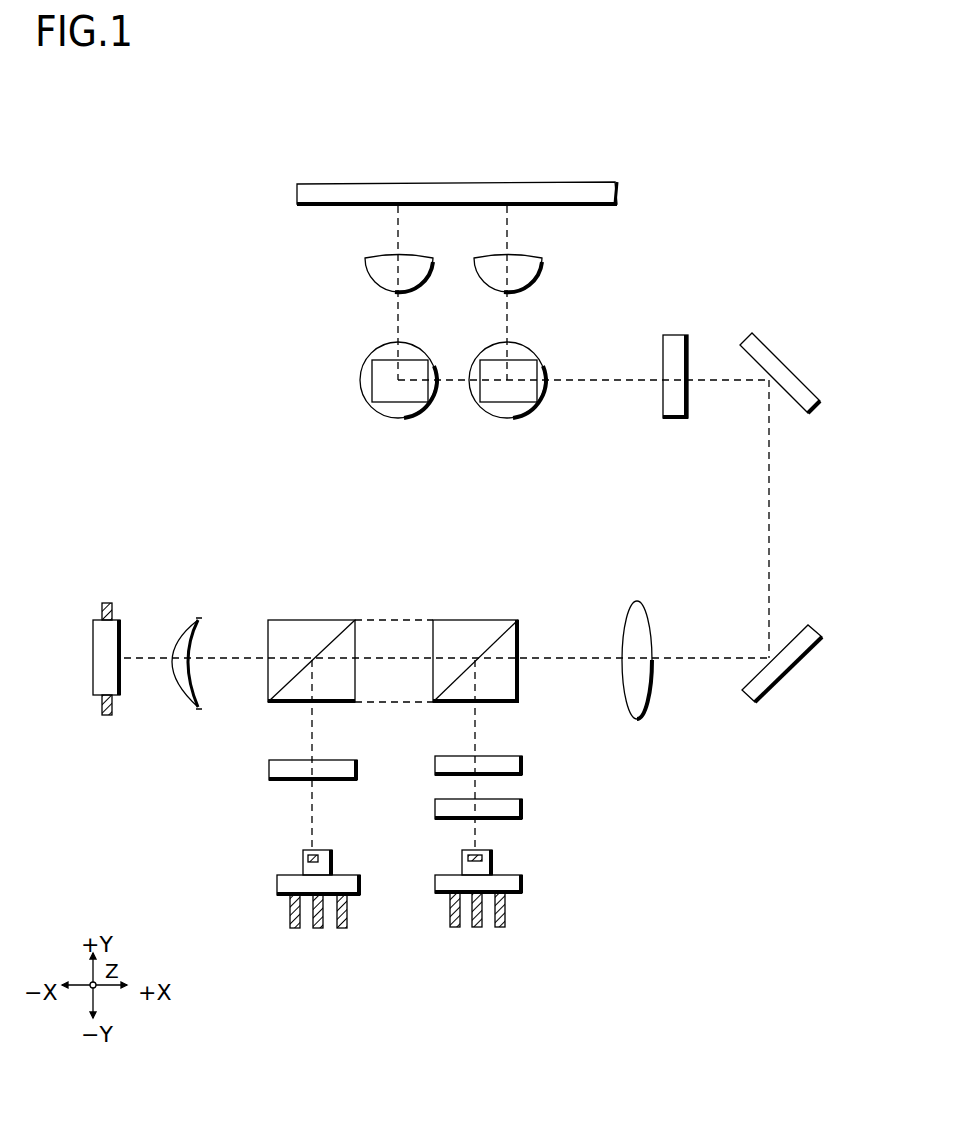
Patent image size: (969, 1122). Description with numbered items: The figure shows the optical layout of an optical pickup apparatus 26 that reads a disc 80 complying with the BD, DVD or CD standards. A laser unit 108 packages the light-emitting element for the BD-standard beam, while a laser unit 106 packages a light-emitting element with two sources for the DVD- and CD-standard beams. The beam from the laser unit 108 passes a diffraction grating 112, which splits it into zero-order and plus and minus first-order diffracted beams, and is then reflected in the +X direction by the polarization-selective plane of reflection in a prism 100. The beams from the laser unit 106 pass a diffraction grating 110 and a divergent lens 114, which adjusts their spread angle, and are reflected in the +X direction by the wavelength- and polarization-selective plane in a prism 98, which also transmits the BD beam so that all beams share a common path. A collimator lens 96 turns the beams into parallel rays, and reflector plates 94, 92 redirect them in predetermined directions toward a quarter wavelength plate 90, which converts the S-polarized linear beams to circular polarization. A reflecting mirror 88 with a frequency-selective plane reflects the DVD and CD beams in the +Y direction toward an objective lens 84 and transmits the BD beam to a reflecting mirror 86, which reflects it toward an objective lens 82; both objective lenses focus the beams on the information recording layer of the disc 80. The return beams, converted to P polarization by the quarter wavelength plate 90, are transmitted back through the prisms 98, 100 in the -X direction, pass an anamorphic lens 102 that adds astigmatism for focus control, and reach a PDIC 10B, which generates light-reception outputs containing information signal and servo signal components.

The optical pickup apparatus 26 is at (450, 196).
The disc 80 is at (618, 187).
The objective lens 82 is at (362, 265).
The objective lens 84 is at (545, 265).
The reflecting mirror 86 is at (400, 420).
The reflecting mirror 88 is at (512, 420).
The quarter wavelength plate 90 is at (677, 420).
The reflector plate 92 is at (783, 358).
The reflector plate 94 is at (795, 665).
The collimator lens 96 is at (636, 600).
The prism 98 is at (470, 617).
The prism 100 is at (300, 618).
The anamorphic lens 102 is at (195, 616).
The PDIC 10B is at (104, 598).
The diffraction grating 112 is at (268, 770).
The divergent lens 114 is at (525, 766).
The diffraction grating 110 is at (525, 808).
The laser unit 108 is at (275, 884).
The laser unit 106 is at (525, 883).